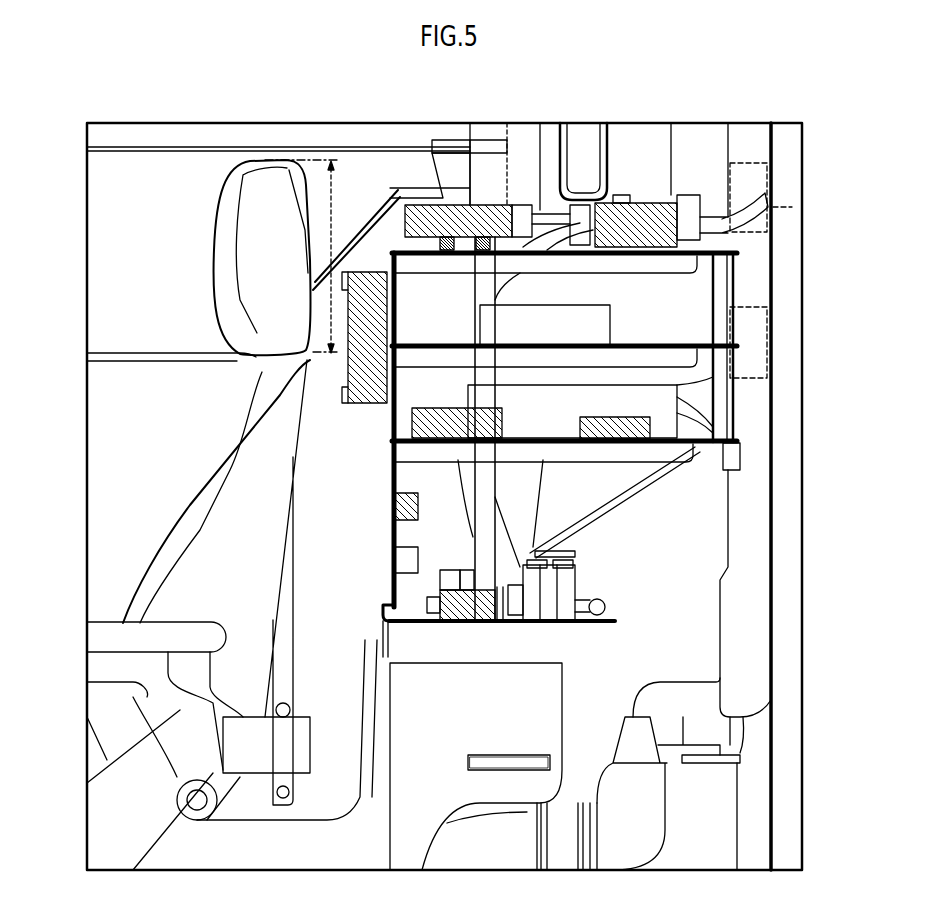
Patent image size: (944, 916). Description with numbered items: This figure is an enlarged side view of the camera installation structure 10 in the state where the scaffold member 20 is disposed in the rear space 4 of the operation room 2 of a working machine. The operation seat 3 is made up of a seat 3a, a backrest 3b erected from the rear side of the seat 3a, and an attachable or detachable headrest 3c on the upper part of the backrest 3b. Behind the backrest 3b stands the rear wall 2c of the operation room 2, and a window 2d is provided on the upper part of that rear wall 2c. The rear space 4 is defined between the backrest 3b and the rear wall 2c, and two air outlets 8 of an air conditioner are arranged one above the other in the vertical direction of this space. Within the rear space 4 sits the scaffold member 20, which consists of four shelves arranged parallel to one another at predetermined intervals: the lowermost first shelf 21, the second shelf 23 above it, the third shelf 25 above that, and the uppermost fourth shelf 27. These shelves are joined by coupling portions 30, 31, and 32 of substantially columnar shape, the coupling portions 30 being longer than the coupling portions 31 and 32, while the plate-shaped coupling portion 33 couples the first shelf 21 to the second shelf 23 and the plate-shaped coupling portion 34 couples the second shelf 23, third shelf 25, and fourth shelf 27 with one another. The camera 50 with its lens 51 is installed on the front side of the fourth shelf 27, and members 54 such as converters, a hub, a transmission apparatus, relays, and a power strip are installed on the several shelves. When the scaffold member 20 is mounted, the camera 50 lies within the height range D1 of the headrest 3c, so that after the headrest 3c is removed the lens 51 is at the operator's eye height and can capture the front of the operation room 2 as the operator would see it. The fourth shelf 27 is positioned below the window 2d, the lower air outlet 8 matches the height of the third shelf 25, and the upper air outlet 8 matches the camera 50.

The operation room 2 is at (112, 319).
The rear wall 2c is at (789, 812).
The window 2d is at (792, 207).
The operation seat 3 is at (210, 470).
The seat 3a is at (95, 765).
The backrest 3b is at (180, 497).
The headrest 3c is at (258, 165).
The rear space 4 is at (326, 526).
The air outlets 8 is at (746, 162).
The camera installation structure 10 is at (695, 170).
The scaffold member 20 is at (391, 228).
The first shelf 21 is at (607, 613).
The second shelf 23 is at (718, 432).
The third shelf 25 is at (718, 338).
The fourth shelf 27 is at (722, 243).
The coupling portion 30 is at (493, 503).
The coupling portion 31 is at (732, 366).
The coupling portion 32 is at (472, 298).
The coupling portion 33 is at (392, 567).
The coupling portion 34 is at (392, 420).
The camera 50 is at (437, 178).
The lens 51 is at (422, 185).
The members 54 is at (625, 205).
The height range D1 is at (331, 215).